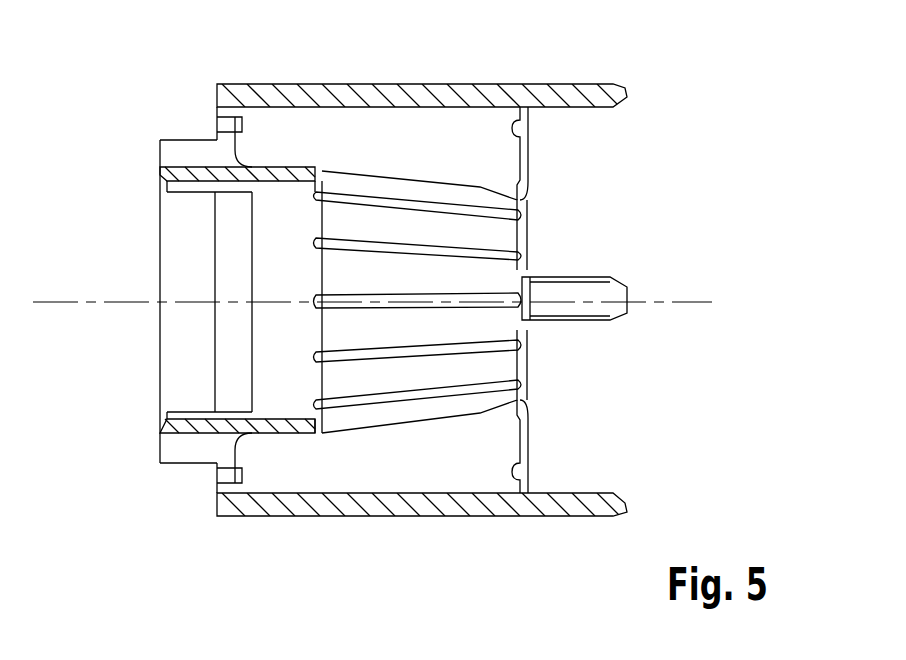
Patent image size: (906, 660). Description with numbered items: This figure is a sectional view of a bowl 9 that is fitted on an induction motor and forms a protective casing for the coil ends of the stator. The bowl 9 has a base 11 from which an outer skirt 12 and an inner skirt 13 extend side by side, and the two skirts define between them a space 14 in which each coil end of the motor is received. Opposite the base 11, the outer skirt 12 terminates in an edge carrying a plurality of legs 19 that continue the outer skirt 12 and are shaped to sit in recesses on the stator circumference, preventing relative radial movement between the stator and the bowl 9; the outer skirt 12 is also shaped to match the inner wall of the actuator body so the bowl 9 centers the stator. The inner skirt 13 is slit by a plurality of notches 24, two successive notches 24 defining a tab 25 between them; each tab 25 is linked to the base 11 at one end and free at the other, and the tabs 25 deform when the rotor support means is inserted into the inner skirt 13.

The bowl 9 is at (190, 109).
The base 11 is at (182, 450).
The outer skirt 12 is at (470, 92).
The inner skirt 13 is at (463, 300).
The space 14 is at (346, 125).
The legs 19 is at (597, 88).
The notches 24 is at (517, 348).
The tabs 25 is at (522, 235).